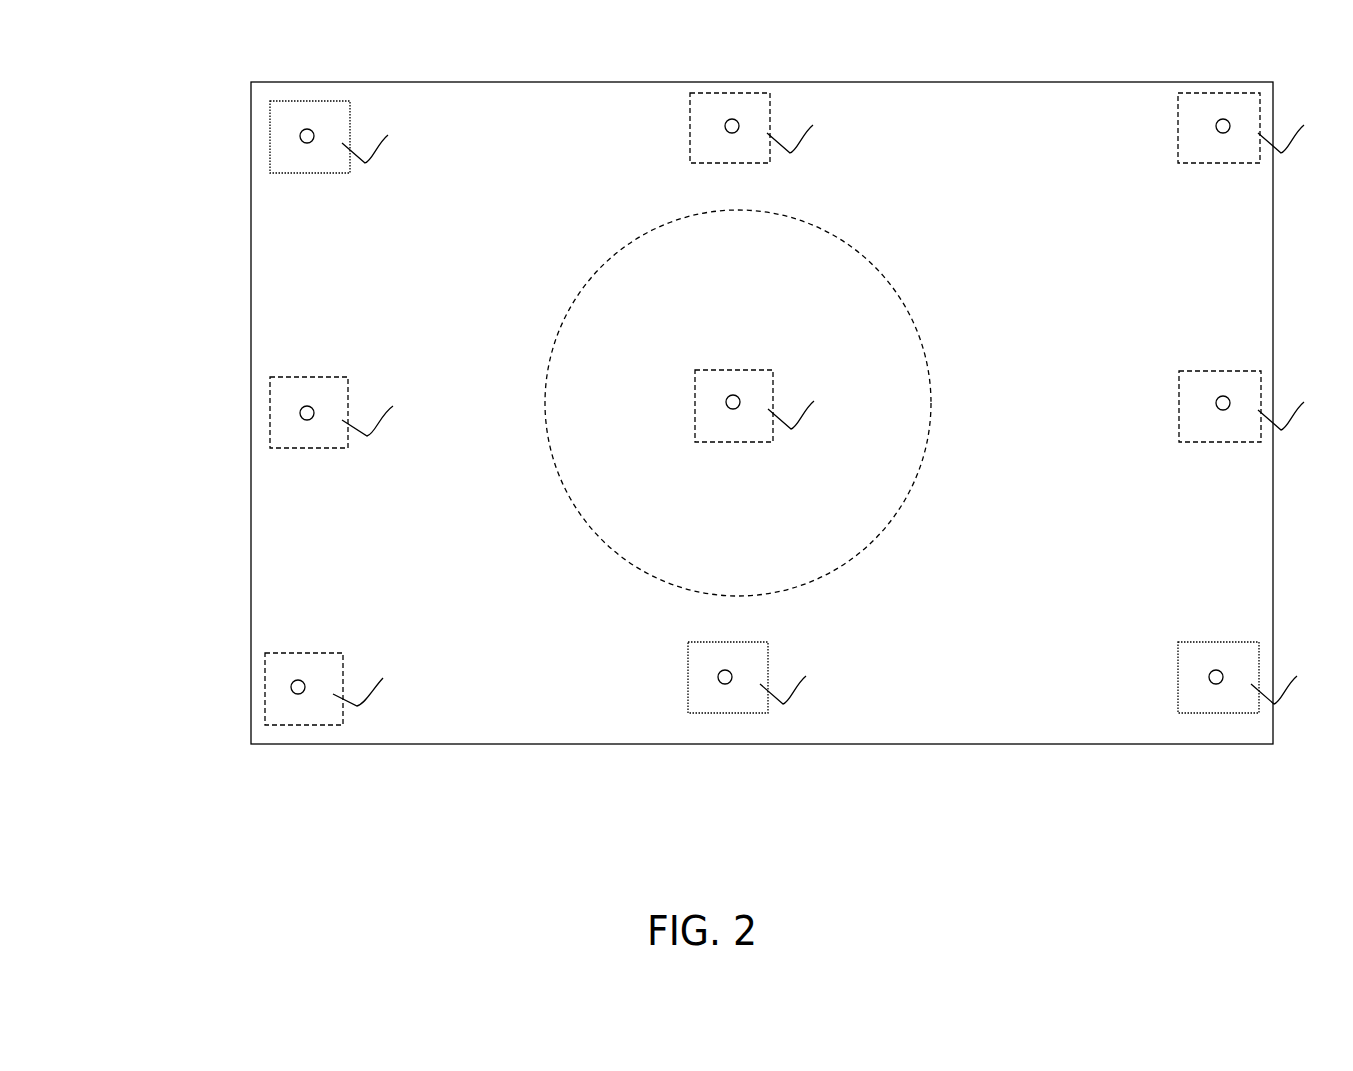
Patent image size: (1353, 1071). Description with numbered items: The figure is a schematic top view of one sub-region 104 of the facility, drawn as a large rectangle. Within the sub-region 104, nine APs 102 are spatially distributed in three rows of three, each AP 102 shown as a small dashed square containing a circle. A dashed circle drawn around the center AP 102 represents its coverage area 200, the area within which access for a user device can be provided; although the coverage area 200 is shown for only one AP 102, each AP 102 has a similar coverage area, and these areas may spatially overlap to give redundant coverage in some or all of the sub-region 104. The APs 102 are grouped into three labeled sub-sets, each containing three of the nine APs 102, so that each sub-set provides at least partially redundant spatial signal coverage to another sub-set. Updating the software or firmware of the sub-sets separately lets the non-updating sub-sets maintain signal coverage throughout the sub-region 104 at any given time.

The access point (AP) 102 is at (300, 133).
The sub-region 104 is at (263, 232).
The coverage area 200 is at (618, 273).